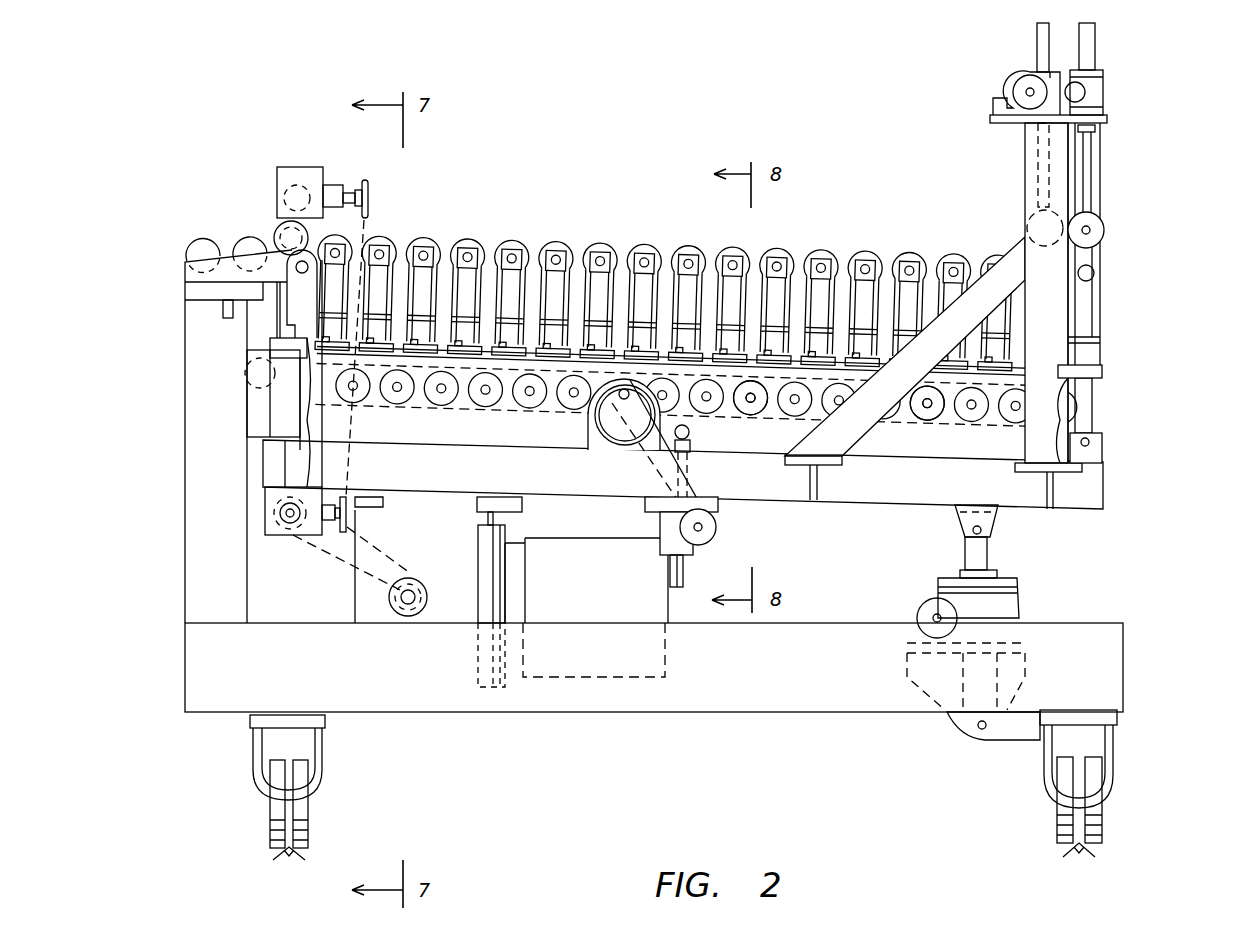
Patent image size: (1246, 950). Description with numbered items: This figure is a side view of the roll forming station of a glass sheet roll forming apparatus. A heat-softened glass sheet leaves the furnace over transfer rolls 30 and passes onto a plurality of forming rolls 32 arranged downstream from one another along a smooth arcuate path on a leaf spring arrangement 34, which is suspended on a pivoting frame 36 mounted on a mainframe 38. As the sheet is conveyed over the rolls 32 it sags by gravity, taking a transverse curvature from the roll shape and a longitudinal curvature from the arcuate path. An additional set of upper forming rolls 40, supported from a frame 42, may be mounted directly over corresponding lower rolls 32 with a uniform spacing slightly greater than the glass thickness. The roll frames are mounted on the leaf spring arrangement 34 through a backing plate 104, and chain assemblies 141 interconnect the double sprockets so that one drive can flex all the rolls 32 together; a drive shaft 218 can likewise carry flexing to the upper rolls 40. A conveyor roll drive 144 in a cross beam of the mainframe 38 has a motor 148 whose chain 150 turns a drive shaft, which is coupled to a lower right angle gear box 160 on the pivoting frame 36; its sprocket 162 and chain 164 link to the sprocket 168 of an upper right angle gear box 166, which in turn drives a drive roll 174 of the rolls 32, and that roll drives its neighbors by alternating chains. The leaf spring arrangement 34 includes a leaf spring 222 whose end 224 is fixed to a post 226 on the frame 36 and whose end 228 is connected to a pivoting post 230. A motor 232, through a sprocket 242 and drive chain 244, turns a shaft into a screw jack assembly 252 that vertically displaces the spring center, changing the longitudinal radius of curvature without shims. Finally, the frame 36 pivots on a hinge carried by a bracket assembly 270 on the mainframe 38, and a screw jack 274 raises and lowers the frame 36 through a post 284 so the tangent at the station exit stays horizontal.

The transfer rolls 30 is at (200, 238).
The forming rolls 32 is at (556, 236).
The leaf spring arrangement 34 is at (433, 397).
The pivoting frame 36 is at (879, 504).
The mainframe 38 is at (796, 713).
The upper forming rolls 40 is at (1062, 212).
The frame 42 is at (1107, 118).
The backing plate 104 is at (758, 398).
The chain assemblies 141 is at (468, 405).
The conveyor roll drive 144 is at (625, 538).
The motor 148 is at (357, 599).
The chain 150 is at (322, 560).
The lower right angle gear box 160 is at (265, 508).
The sprocket 162 is at (350, 517).
The chain 164 is at (354, 418).
The upper right angle gear box 166 is at (307, 167).
The sprocket 168 is at (370, 198).
The drive roll 174 is at (283, 235).
The drive shaft 218 is at (283, 222).
The leaf spring 222 is at (968, 412).
The end 224 is at (300, 345).
The post 226 is at (270, 400).
The end 228 is at (1103, 372).
The pivoting post 230 is at (1098, 413).
The motor 232 is at (588, 432).
The sprocket 242 is at (718, 525).
The drive chain 244 is at (642, 455).
The screw jack assembly 252 is at (700, 548).
The bracket assembly 270 is at (293, 272).
The screw jack 274 is at (1018, 598).
The post 284 is at (690, 478).